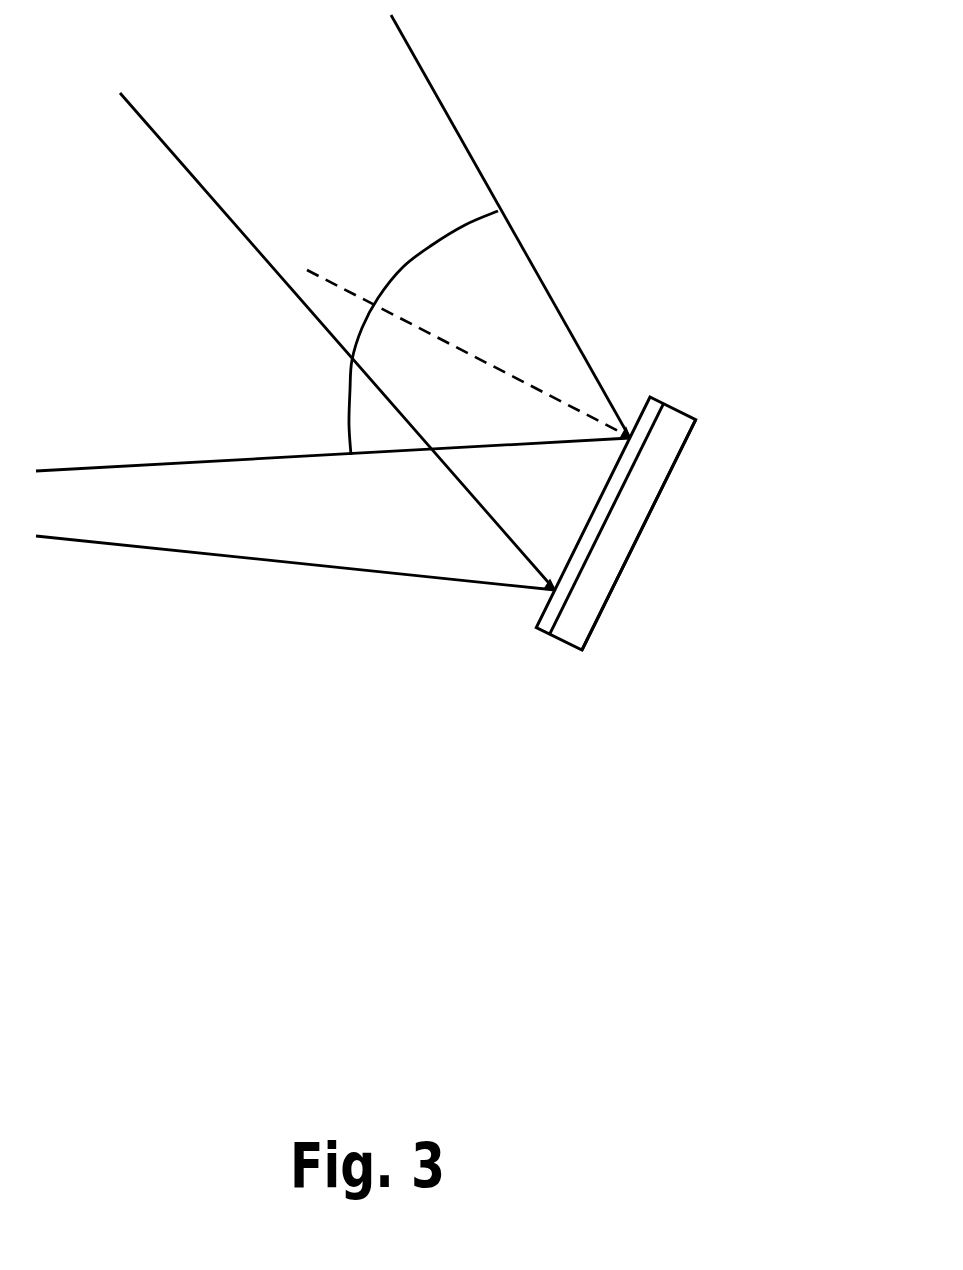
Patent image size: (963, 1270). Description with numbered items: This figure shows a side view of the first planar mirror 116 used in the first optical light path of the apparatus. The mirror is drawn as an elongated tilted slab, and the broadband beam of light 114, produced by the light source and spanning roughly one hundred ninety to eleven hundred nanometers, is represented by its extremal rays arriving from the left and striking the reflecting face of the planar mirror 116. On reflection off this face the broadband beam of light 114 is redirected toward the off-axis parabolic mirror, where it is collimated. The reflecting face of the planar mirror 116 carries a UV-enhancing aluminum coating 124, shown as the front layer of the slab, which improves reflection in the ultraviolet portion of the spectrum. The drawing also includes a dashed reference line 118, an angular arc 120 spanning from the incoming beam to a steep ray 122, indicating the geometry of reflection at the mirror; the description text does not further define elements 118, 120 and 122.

The broadband beam of light 114 is at (332, 455).
The first planar mirror 116 is at (677, 467).
The normal axis (dashed) 118 is at (527, 381).
The angle arc 120 is at (408, 363).
The light ray 122 is at (514, 297).
The UV-enhancing aluminum coating 124 is at (655, 400).